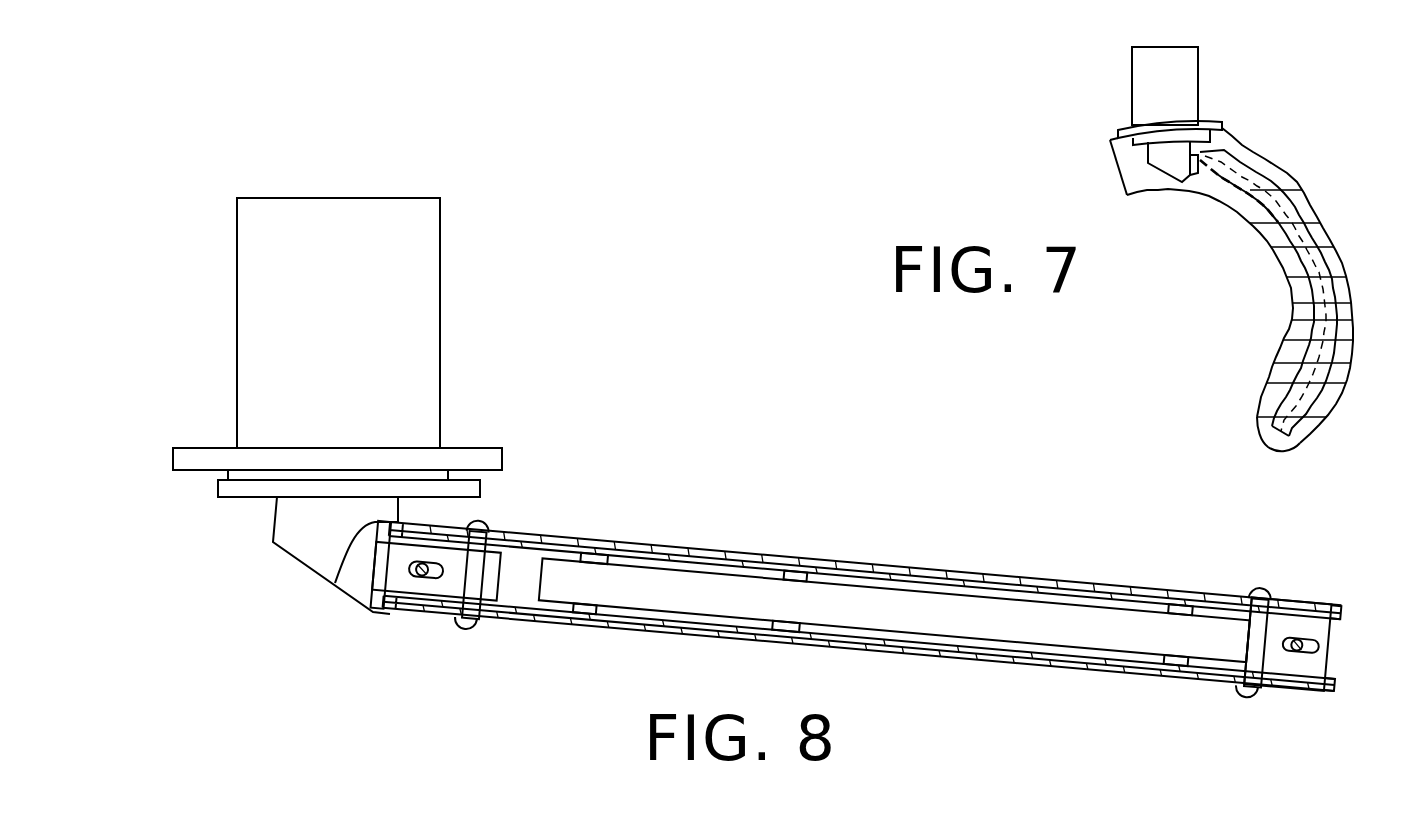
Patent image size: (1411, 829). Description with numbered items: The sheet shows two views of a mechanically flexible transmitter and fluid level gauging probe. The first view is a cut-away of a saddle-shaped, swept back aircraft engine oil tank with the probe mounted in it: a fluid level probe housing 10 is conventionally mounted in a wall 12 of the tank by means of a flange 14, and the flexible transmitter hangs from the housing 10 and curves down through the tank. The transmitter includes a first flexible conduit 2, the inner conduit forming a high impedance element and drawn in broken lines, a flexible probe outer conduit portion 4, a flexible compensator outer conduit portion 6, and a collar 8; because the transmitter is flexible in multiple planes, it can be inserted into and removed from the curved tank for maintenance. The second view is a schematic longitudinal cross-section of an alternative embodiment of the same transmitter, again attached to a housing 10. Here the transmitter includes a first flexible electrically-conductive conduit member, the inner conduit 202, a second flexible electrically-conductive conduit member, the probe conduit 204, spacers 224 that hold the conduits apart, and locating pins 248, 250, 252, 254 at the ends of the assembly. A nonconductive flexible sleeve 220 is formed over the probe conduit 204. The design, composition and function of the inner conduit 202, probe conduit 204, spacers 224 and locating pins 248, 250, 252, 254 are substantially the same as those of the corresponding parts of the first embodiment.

In FIG. 7, the first flexible conduit 2 is at (1282, 200).
In FIG. 7, the flexible probe outer conduit portion 4 is at (1317, 230).
In FIG. 7, the flexible compensator outer conduit portion 6 is at (1313, 403).
In FIG. 7, the collar 8 is at (1330, 330).
In FIG. 7, the fluid level probe housing 10 is at (1198, 83).
In FIG. 8, the fluid level probe housing 10 is at (446, 336).
In FIG. 7, the wall 12 is at (1268, 157).
In FIG. 7, the flange 14 is at (1210, 123).
In FIG. 8, the first flexible electrically-conductive conduit member 202 is at (687, 572).
In FIG. 8, the second flexible electrically-conductive conduit member 204 is at (710, 633).
In FIG. 8, the nonconductive flexible sleeve 220 is at (750, 638).
In FIG. 8, the spacers 224 is at (970, 593).
In FIG. 8, the locating pin 248 is at (430, 582).
In FIG. 8, the locating pin 250 is at (490, 620).
In FIG. 8, the locating pin 252 is at (1243, 677).
In FIG. 8, the locating pin 254 is at (1312, 652).